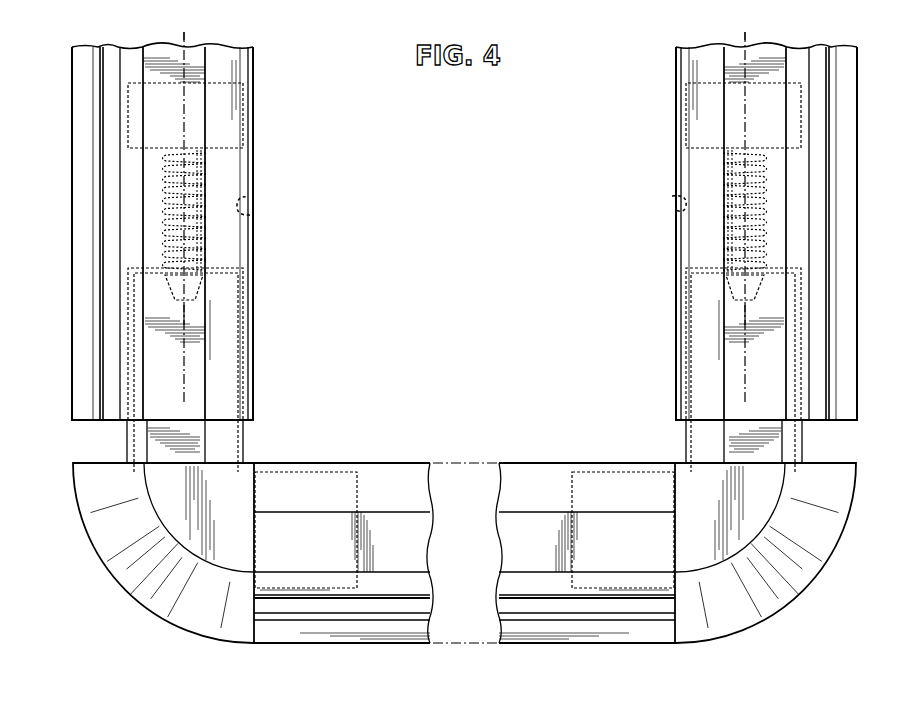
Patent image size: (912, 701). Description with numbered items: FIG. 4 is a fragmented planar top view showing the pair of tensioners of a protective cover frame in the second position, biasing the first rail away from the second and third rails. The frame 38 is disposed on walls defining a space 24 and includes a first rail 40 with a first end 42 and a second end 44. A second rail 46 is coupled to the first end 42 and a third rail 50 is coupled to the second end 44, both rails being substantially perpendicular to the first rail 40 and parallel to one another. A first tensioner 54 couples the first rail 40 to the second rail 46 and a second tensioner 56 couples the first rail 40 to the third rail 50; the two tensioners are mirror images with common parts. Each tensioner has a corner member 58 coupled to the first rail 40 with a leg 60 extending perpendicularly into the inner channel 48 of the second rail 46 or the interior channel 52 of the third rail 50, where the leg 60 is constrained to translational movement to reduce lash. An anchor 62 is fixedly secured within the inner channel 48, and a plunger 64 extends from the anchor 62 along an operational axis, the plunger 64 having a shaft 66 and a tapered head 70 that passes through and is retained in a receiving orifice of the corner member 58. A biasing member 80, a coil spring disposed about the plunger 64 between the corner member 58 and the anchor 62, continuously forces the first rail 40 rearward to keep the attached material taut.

The space 24 is at (477, 271).
The frame 38 is at (59, 401).
The first rail 40 is at (523, 630).
The first end 42 is at (262, 470).
The second end 44 is at (660, 468).
The second rail 46 is at (84, 168).
The inner channel 48 is at (250, 215).
The third rail 50 is at (846, 162).
The interior channel 52 is at (672, 196).
The first tensioner 54 is at (158, 194).
The second tensioner 56 is at (773, 183).
The corner member 58 is at (103, 528).
The leg 60 is at (222, 442).
The anchor 62 is at (228, 108).
The plunger 64 is at (162, 291).
The shaft 66 is at (205, 193).
The head 70 is at (197, 288).
The biasing member 80 is at (192, 214).